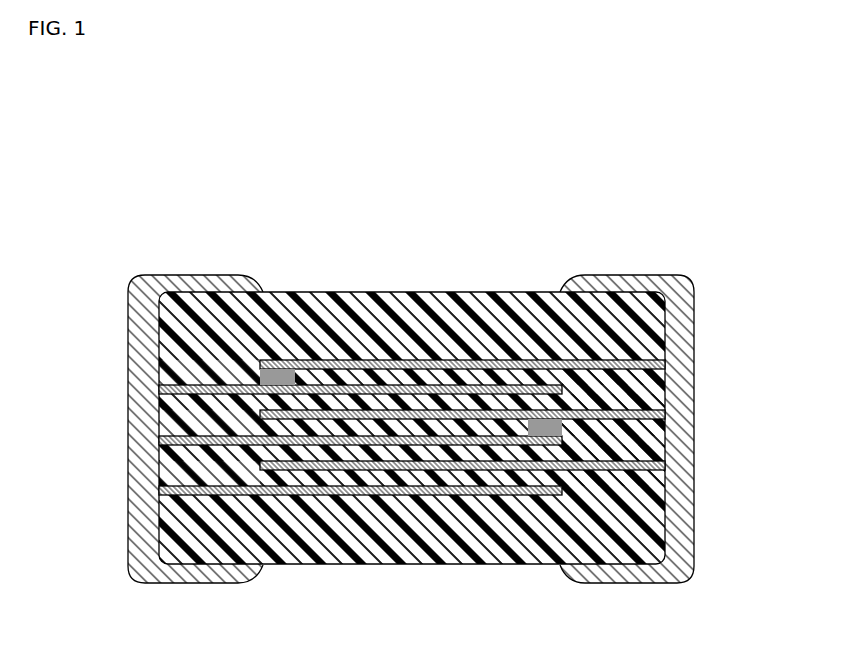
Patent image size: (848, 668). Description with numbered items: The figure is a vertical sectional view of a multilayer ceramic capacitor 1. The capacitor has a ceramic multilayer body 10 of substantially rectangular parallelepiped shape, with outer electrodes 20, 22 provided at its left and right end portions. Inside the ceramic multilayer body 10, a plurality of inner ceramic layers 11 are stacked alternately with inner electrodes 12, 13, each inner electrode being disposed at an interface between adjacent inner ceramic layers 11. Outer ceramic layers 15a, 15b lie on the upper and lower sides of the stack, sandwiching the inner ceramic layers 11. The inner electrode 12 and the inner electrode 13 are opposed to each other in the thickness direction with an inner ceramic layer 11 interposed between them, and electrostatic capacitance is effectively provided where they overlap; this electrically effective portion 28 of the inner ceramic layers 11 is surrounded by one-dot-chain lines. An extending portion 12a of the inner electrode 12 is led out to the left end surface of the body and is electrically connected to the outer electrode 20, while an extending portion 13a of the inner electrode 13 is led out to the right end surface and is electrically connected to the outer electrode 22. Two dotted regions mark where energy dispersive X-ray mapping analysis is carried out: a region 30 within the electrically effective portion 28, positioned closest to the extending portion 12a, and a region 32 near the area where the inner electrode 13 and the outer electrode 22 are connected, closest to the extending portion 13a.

The multilayer ceramic capacitor 1 is at (425, 397).
The ceramic multilayer body 10 is at (470, 292).
The inner ceramic layer 11 is at (505, 422).
The inner electrode 12 is at (347, 490).
The extending portion of the inner electrode 12 12a is at (260, 368).
The inner electrode 13 is at (430, 478).
The extending portion of the inner electrode 13 13a is at (640, 488).
The outer ceramic layer 15a is at (665, 292).
The outer ceramic layer 15b is at (665, 495).
The outer electrode 20 is at (170, 275).
The outer electrode 22 is at (665, 275).
The electrically effective portion of the inner ceramic layers 28 is at (260, 403).
The region 30 is at (283, 372).
The region 32 is at (548, 420).